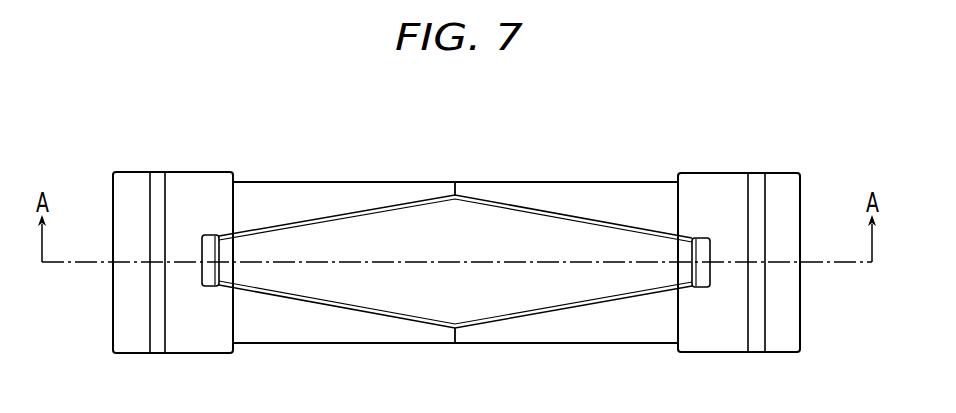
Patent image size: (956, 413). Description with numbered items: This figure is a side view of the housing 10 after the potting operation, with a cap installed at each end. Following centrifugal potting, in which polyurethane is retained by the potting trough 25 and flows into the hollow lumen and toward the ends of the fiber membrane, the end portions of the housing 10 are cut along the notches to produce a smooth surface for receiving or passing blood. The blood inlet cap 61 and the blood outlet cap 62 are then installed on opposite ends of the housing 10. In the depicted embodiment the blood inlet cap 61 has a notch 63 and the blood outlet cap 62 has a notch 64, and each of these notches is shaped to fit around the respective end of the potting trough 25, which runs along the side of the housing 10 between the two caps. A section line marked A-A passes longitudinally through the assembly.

The housing 10 is at (484, 180).
The potting trough 25 is at (370, 208).
The blood inlet cap 61 is at (717, 173).
The blood outlet cap 62 is at (127, 172).
The notch 63 is at (696, 238).
The notch 64 is at (206, 235).